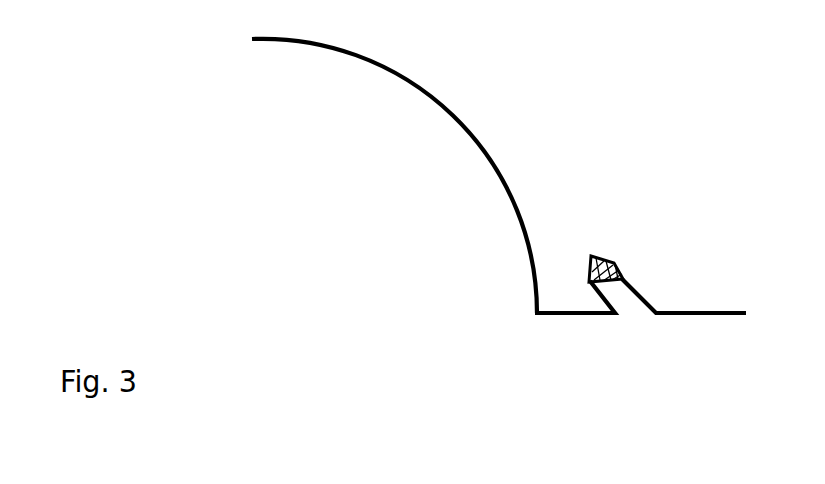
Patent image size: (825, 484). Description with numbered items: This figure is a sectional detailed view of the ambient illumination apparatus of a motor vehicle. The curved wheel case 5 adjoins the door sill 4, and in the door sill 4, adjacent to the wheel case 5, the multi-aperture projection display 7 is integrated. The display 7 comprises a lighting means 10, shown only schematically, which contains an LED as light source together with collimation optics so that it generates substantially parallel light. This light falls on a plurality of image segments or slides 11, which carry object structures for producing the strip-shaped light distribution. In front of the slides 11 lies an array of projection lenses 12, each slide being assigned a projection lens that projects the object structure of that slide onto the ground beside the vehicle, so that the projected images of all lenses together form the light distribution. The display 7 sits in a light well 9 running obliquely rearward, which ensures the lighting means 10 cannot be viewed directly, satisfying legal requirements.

The door sill 4 is at (733, 318).
The wheel case 5 is at (466, 129).
The multi-aperture projection display 7 is at (590, 241).
The light well 9 is at (635, 315).
The lighting means 10 is at (588, 258).
The slides 11 is at (615, 265).
The projection lenses 12 is at (617, 277).